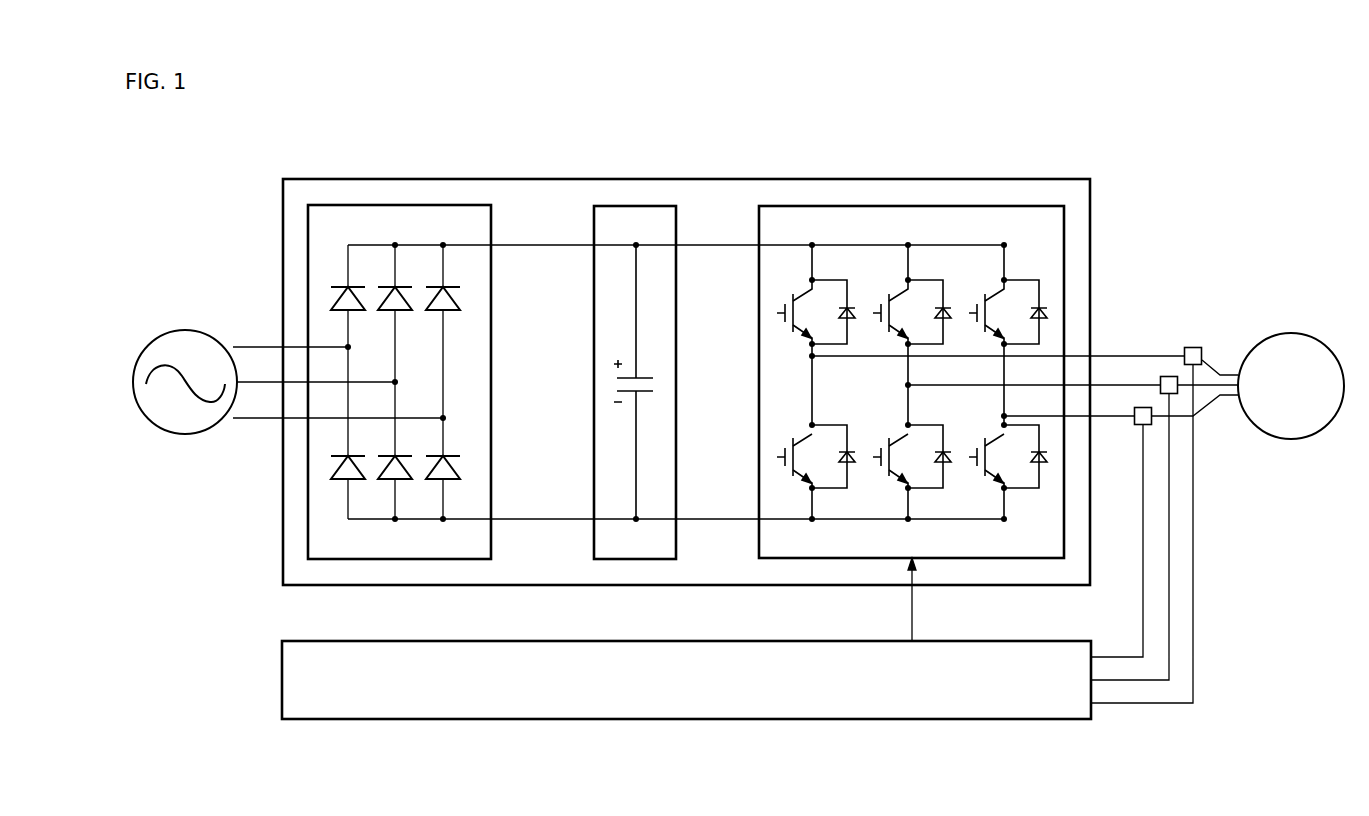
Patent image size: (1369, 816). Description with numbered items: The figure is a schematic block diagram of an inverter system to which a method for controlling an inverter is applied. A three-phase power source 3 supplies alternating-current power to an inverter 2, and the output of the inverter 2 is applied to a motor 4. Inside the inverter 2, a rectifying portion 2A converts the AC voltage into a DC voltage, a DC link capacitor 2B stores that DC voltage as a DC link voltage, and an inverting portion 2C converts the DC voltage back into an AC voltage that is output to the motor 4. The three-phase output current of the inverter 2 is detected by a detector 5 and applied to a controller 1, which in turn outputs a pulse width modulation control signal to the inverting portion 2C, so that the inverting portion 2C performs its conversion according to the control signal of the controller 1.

The controller 1 is at (282, 680).
The inverter 2 is at (1008, 179).
The rectifying portion 2A is at (401, 205).
The DC link capacitor 2B is at (636, 206).
The inverting portion 2C is at (913, 206).
The three-phase power source 3 is at (185, 330).
The motor 4 is at (1291, 333).
The detector 5 is at (1193, 347).